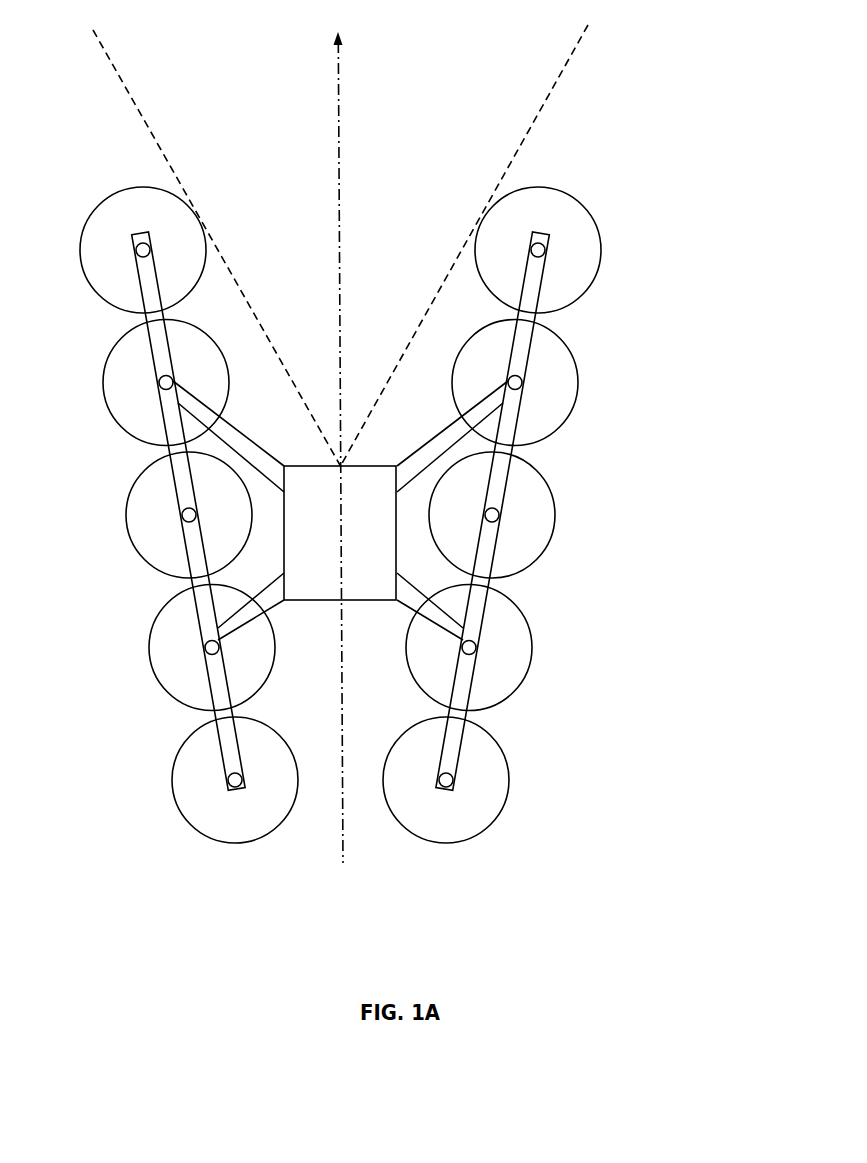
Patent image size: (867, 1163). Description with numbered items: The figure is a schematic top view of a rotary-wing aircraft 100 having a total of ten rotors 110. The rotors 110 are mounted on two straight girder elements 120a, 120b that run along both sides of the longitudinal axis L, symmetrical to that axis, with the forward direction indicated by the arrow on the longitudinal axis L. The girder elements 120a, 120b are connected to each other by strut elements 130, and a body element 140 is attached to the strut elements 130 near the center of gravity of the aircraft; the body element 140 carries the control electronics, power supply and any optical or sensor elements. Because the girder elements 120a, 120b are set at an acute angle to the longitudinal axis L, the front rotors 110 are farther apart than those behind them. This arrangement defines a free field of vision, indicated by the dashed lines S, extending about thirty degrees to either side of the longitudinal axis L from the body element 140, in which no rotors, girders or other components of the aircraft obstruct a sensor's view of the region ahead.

The rotary-wing aircraft 100 is at (371, 487).
The rotor 110 is at (599, 234).
The girder element 120a is at (158, 515).
The girder element 120b is at (553, 499).
The strut element 130 is at (546, 505).
The body element 140 is at (207, 521).
The longitudinal axis L is at (420, 447).
The dashed lines indicating free field of vision S is at (389, 245).